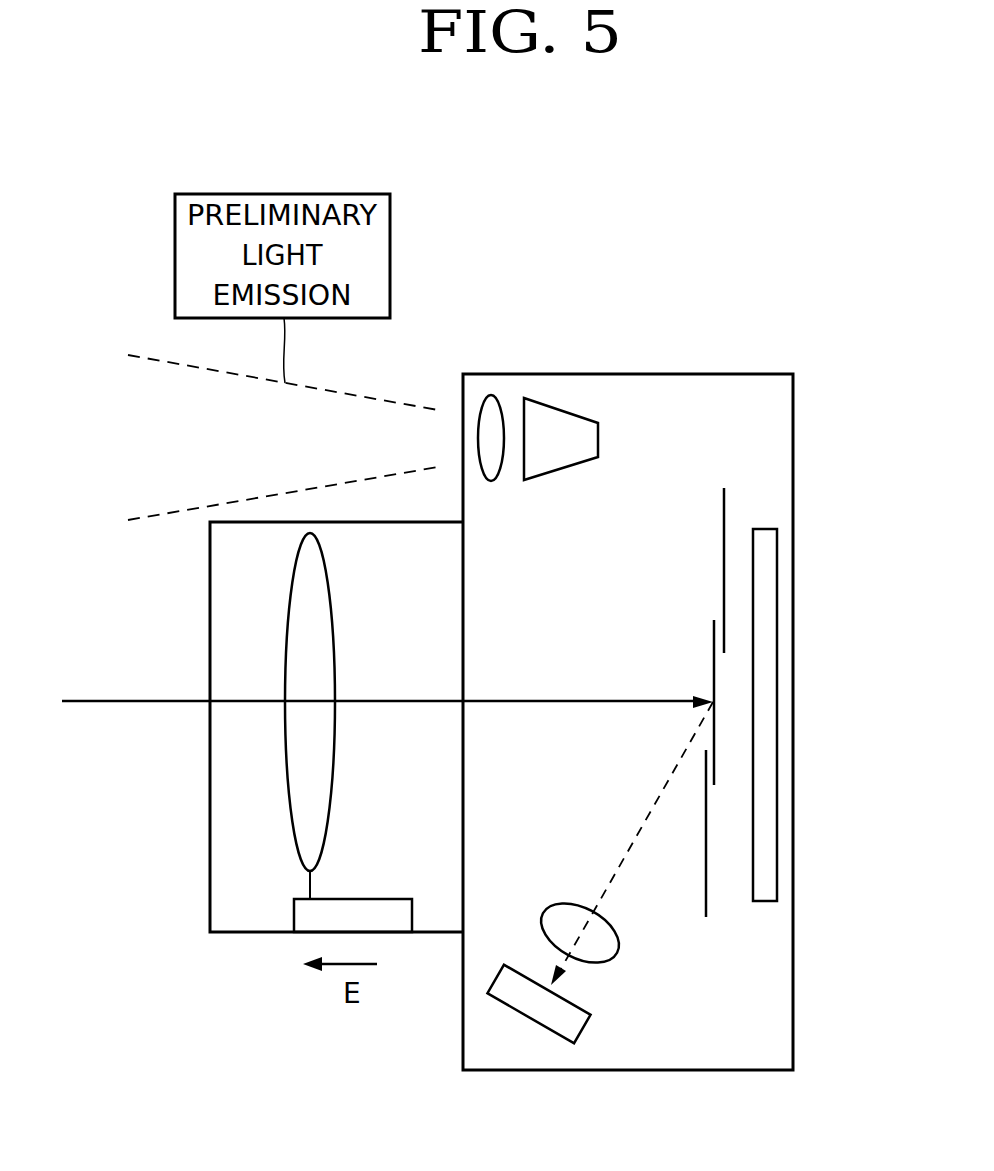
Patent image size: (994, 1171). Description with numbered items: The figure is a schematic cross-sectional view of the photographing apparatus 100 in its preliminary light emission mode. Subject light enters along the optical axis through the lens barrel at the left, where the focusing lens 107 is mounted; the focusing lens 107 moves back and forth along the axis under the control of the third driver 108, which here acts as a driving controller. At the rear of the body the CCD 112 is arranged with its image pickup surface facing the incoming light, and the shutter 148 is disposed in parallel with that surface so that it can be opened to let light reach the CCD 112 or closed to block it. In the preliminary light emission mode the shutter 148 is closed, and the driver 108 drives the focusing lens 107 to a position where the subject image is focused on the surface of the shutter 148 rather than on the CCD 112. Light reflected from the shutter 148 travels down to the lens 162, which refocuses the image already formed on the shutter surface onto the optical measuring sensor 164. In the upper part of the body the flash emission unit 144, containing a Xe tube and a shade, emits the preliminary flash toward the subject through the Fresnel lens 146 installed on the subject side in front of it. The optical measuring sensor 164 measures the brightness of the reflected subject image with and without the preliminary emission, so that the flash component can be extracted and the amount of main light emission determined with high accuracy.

The photographing apparatus 100 is at (650, 293).
The focusing lens 107 is at (285, 792).
The third driver 108 is at (294, 904).
The CCD 112 is at (777, 596).
The flash emission unit 144 is at (562, 407).
The Fresnel lens 146 is at (491, 395).
The shutter 148 is at (705, 890).
The lens 162 is at (618, 950).
The optical measuring sensor 164 is at (542, 1027).